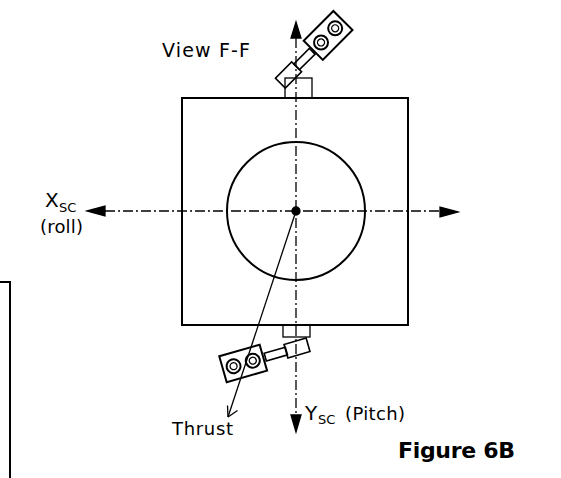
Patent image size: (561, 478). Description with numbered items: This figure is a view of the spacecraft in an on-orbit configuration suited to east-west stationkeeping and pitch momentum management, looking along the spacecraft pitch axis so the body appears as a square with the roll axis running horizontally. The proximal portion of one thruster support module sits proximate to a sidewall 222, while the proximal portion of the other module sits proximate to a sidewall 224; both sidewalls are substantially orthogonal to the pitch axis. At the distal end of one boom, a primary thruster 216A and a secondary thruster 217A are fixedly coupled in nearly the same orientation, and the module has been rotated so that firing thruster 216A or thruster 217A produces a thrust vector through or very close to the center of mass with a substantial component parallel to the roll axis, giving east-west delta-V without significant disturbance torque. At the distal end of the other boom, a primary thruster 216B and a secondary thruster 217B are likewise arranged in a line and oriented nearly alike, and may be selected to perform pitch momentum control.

The sidewall 222 is at (372, 328).
The sidewall 224 is at (210, 97).
The primary thruster 216A is at (228, 363).
The primary thruster 216B is at (347, 22).
The secondary thruster 217A is at (262, 348).
The secondary thruster 217B is at (335, 44).